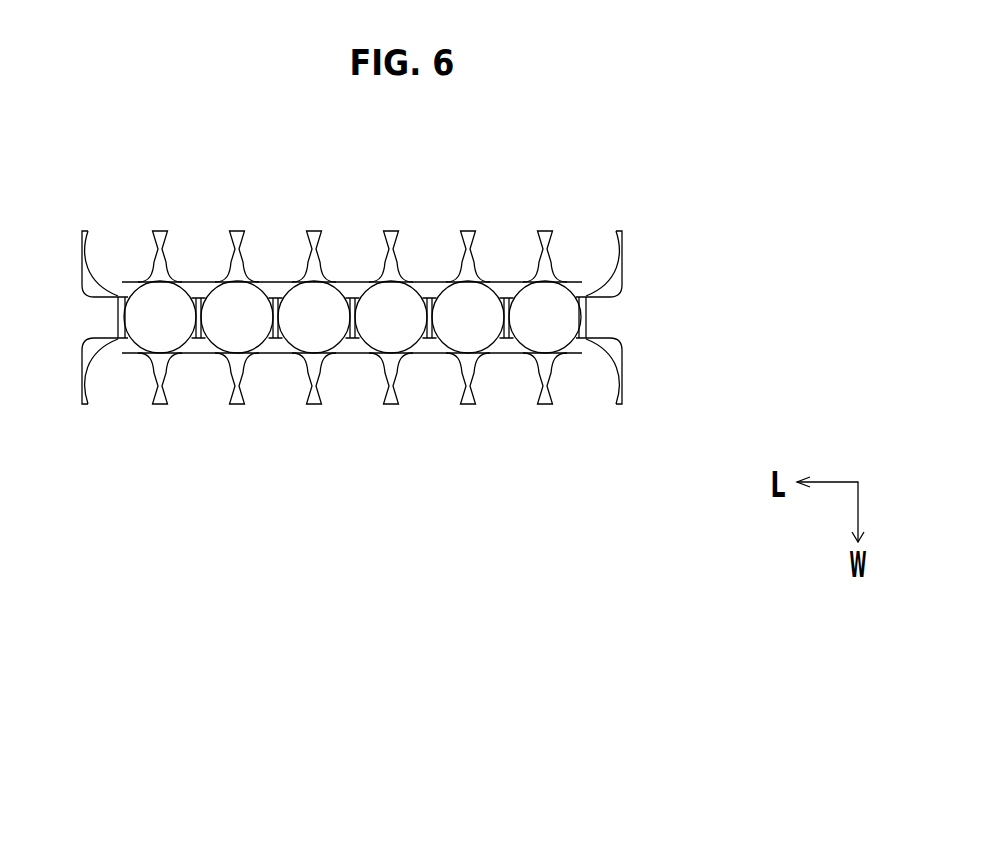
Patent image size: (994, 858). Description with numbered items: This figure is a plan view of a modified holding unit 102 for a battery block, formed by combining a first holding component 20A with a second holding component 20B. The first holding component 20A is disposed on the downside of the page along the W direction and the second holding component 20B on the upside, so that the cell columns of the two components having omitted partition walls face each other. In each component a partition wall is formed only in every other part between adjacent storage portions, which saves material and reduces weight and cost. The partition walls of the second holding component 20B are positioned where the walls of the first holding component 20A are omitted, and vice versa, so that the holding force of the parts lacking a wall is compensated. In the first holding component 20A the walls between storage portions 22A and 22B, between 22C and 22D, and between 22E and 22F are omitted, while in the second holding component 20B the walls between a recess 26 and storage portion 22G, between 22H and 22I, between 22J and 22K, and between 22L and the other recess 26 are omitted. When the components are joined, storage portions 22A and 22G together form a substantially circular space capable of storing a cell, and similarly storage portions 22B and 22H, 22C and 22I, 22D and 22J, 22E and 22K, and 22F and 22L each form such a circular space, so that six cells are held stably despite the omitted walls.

The battery module 102 is at (808, 769).
The first holding component 20A is at (620, 373).
The second holding component 20B is at (625, 285).
The storage portion 22A is at (143, 335).
The storage portion 22B is at (220, 335).
The storage portion 22C is at (297, 335).
The storage portion 22D is at (374, 335).
The storage portion 22E is at (451, 335).
The storage portion 22F is at (528, 335).
The storage portion 22G is at (177, 303).
The storage portion 22H is at (254, 303).
The storage portion 22I is at (331, 303).
The storage portion 22J is at (408, 303).
The storage portion 22K is at (485, 303).
The storage portion 22L is at (562, 303).
The recess 26 is at (82, 320).